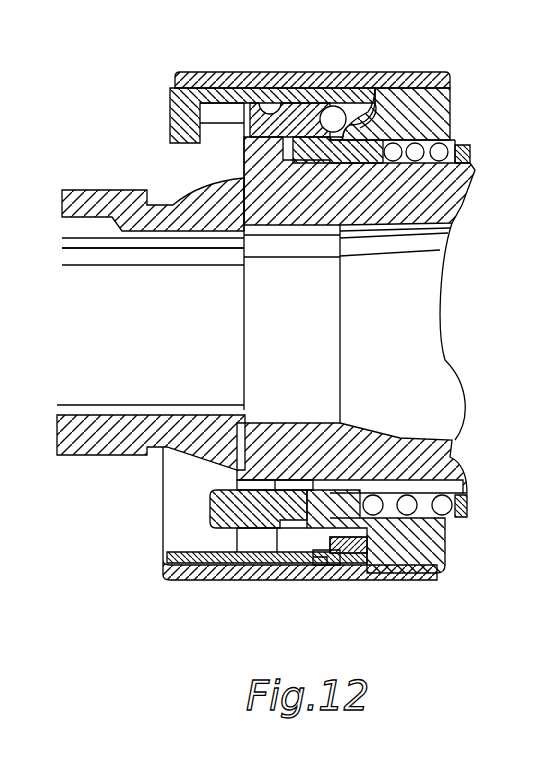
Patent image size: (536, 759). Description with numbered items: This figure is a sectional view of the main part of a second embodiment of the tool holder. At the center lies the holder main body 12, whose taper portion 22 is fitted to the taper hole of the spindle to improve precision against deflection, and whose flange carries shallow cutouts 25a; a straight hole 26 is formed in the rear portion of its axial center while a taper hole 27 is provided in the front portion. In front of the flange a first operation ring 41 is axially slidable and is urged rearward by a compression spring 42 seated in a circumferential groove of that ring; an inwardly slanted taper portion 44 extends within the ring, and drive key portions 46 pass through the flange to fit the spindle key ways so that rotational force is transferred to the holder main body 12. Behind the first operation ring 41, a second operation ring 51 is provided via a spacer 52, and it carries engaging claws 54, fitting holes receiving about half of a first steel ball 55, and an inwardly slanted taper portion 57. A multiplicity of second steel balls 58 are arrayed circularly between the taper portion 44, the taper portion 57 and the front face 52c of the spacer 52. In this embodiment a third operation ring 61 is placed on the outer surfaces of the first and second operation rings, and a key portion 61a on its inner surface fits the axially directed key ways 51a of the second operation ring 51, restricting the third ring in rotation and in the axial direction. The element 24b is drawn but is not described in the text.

The holder main body 12 is at (79, 186).
The taper portion 22 is at (183, 186).
The plate 24b is at (237, 565).
The shallow cutouts 25a is at (206, 72).
The straight hole 26 is at (82, 242).
The taper hole 27 is at (398, 225).
The first operation ring 41 is at (440, 555).
The compression spring 42 is at (440, 523).
The taper portion 44 is at (418, 72).
The drive key portions 46 is at (214, 511).
The second operation ring 51 is at (183, 582).
The key ways 51a is at (330, 583).
The spacer 52 is at (255, 72).
The front face 52c is at (328, 132).
The engaging claws 54 is at (170, 113).
The first steel ball 55 is at (293, 72).
The taper portion 57 is at (372, 72).
The second steel balls 58 is at (338, 72).
The third operation ring 61 is at (278, 545).
The key portion 61a is at (357, 555).